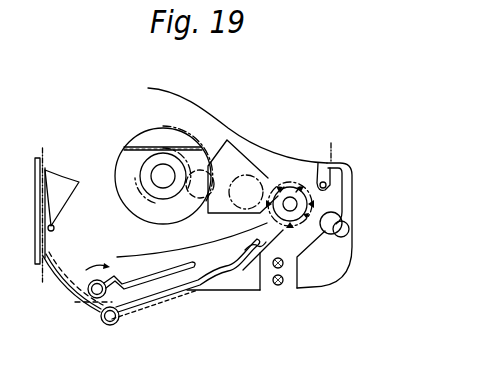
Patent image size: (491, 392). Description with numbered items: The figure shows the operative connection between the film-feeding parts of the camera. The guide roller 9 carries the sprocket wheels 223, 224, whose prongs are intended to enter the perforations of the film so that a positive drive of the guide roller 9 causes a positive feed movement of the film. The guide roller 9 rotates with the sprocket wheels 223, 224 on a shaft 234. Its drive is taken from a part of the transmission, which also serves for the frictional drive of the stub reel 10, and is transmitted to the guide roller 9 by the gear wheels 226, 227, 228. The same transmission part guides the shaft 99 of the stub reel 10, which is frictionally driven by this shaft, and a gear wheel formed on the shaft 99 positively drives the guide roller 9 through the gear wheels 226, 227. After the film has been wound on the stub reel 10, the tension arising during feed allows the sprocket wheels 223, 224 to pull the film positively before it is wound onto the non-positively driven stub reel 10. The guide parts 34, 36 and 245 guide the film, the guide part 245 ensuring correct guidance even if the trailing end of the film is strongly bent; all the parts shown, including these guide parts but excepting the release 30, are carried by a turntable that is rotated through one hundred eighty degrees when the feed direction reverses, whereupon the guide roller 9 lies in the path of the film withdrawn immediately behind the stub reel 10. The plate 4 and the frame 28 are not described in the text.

The side plate 4 is at (40, 205).
The guide roller 9 is at (305, 193).
The stub reel 10 is at (125, 173).
The frame 28 is at (331, 165).
The release 30 is at (333, 232).
The guide part 34 is at (72, 300).
The guide part 36 is at (183, 293).
The shaft 99 is at (162, 175).
The sprocket wheel 223 is at (276, 188).
The sprocket wheel 224 is at (292, 186).
The gear wheel 226 is at (200, 184).
The gear wheel 227 is at (246, 190).
The gear wheel 228 is at (283, 232).
The shaft 234 is at (287, 193).
The guide part 245 is at (137, 285).